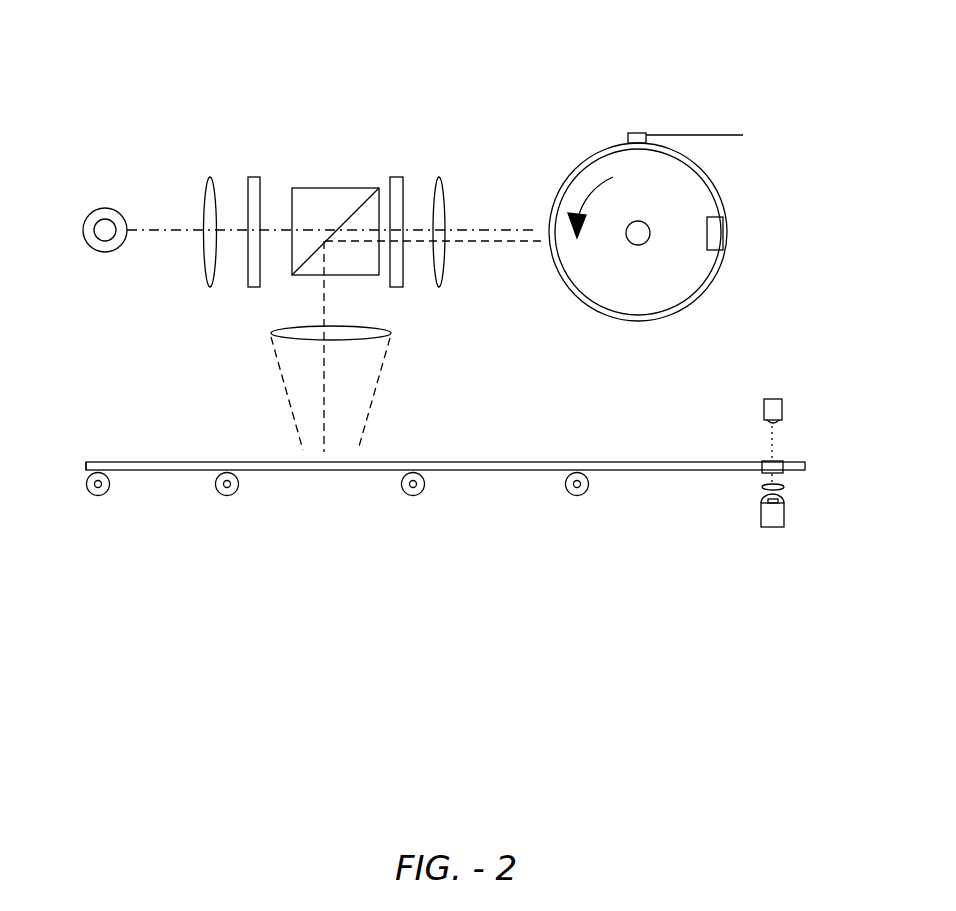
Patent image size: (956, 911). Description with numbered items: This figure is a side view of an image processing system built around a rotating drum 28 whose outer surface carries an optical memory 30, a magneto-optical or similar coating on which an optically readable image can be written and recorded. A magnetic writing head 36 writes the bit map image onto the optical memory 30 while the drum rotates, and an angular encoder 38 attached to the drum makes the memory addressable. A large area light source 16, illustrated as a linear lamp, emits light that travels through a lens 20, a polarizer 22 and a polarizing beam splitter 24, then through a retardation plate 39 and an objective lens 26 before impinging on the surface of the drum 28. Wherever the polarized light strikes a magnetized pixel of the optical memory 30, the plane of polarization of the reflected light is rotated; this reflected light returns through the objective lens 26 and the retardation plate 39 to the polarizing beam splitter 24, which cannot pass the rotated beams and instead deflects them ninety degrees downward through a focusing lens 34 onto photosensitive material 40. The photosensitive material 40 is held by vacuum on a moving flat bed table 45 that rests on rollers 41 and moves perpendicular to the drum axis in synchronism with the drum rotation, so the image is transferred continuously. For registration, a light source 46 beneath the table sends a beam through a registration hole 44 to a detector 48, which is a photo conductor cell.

The large area light source 16 is at (105, 207).
The lens 20 is at (205, 177).
The polarizer 22 is at (252, 176).
The polarizing beam splitter 24 is at (322, 188).
The objective lens 26 is at (434, 177).
The drum 28 is at (683, 178).
The optical memory 30 is at (565, 178).
The focusing lens 34 is at (270, 333).
The magnetic writing head 36 is at (640, 130).
The angular encoder 38 is at (726, 230).
The retardation plate 39 is at (395, 177).
The photosensitive material 40 is at (260, 462).
The rollers 41 is at (228, 495).
The registration hole 44 is at (772, 460).
The flat bed table 45 is at (85, 462).
The light source 46 is at (755, 515).
The detector 48 is at (783, 410).